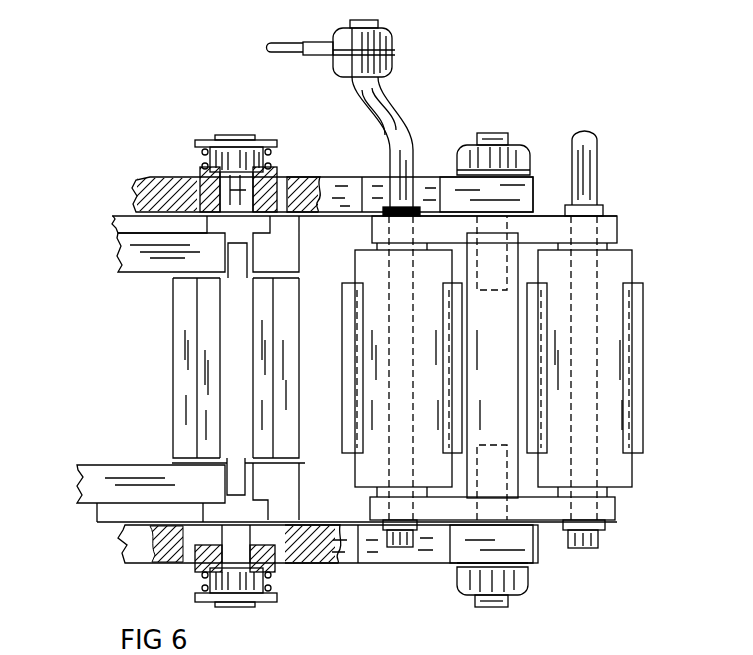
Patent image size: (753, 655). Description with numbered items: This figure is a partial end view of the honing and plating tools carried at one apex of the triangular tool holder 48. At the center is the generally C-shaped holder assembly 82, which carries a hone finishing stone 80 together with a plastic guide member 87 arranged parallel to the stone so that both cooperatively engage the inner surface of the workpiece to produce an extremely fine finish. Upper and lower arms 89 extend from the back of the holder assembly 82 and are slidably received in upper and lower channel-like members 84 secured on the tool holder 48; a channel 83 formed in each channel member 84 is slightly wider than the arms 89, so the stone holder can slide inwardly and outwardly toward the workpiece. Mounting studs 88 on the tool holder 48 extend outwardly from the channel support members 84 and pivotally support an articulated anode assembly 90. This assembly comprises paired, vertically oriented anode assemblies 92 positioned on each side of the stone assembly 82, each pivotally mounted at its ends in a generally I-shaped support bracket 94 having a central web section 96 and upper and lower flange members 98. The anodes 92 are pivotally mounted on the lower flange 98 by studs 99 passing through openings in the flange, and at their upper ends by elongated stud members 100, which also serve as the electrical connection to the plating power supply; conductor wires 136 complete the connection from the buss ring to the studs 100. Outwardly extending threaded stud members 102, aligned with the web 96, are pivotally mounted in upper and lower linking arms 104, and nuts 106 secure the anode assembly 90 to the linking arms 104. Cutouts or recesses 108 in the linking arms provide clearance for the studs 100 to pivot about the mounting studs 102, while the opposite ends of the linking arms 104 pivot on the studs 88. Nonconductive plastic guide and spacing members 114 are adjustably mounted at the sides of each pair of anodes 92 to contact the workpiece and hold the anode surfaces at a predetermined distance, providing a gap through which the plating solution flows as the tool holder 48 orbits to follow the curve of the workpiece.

The tool holder 48 is at (118, 248).
The hone finishing stone 80 is at (267, 345).
The holder assembly 82 is at (214, 370).
The channel 83 is at (247, 243).
The channel-like member 84 is at (290, 177).
The plastic guide member 87 is at (210, 348).
The mounting stud 88 is at (237, 137).
The arm 89 is at (236, 262).
The articulated anode assembly 90 is at (573, 95).
The anode assembly 92 is at (362, 475).
The support bracket 94 is at (613, 200).
The central web section 96 is at (482, 318).
The flange member 98 is at (613, 225).
The stud 99 is at (593, 548).
The elongated stud member 100 is at (385, 113).
The threaded stud member 102 is at (492, 133).
The linking arm 104 is at (533, 190).
The nut 106 is at (460, 147).
The cutout 108 is at (375, 183).
The plastic guide and spacing member 114 is at (343, 284).
The conductor wire 136 is at (267, 44).